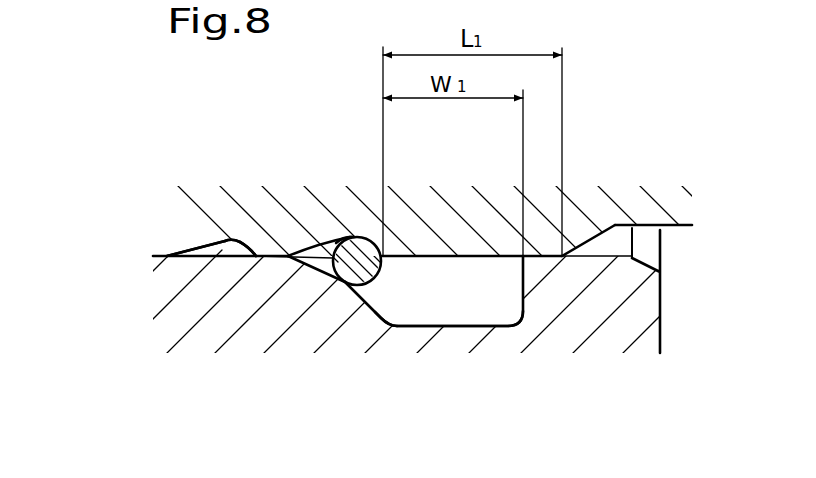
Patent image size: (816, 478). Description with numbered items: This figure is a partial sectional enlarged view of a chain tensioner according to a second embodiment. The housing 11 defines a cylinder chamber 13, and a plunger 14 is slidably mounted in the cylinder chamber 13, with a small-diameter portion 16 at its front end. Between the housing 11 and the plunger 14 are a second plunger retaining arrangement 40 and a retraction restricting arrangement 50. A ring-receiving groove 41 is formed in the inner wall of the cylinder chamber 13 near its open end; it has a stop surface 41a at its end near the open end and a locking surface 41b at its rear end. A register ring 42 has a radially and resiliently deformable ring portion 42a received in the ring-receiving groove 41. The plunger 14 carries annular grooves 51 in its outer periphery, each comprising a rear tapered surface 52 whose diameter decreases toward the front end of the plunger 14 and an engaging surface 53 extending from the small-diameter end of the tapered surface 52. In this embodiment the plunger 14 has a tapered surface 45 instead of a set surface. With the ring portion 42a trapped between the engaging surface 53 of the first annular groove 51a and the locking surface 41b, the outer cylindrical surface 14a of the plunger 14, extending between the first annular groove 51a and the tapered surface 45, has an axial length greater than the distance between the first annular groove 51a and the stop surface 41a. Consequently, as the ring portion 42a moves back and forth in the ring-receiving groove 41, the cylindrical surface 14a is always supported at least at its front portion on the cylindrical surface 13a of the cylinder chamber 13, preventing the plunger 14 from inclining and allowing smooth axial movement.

The housing 11 is at (210, 327).
The cylinder chamber 13 is at (166, 256).
The cylindrical surface of the cylinder chamber 13a is at (612, 258).
The plunger 14 is at (591, 208).
The outer cylindrical surface of the plunger 14a is at (458, 252).
The small-diameter portion 16 is at (671, 205).
The second plunger retaining arrangement 40 is at (345, 296).
The ring-receiving groove 41 is at (449, 310).
The stop surface 41a is at (512, 306).
The locking surface 41b is at (385, 318).
The register ring 42 is at (382, 266).
The ring portion 42a is at (333, 226).
The tapered surface 45 is at (581, 246).
The retraction restricting arrangement 50 is at (347, 233).
The annular groove 51 is at (226, 240).
The first annular groove 51a is at (300, 253).
The tapered surface of annular groove 52 is at (211, 243).
The engaging surface 53 is at (243, 257).